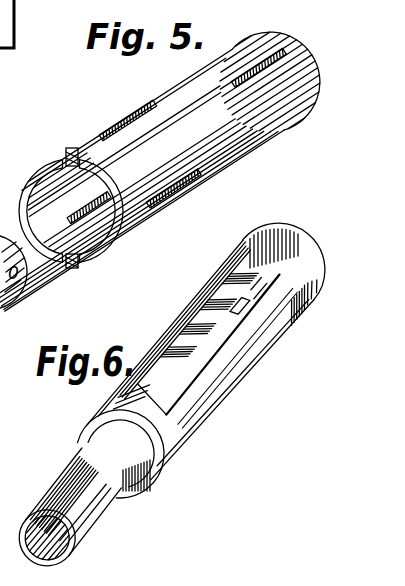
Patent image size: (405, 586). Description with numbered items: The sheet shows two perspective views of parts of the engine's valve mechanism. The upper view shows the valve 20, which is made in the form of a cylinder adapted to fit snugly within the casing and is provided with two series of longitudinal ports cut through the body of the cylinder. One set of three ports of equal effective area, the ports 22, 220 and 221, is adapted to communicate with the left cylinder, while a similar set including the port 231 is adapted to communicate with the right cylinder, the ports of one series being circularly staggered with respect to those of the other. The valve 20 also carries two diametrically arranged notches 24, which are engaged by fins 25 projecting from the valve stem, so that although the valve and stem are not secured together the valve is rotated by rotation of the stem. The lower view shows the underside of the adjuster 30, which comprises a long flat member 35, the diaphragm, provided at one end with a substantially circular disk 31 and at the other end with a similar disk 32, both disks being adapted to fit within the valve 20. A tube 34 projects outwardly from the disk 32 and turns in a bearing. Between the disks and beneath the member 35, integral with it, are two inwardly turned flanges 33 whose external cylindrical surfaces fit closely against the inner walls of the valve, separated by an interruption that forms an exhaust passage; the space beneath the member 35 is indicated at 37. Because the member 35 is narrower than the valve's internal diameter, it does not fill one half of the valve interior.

In FIG. 5, the valve 20 is at (169, 163).
In FIG. 5, the port 22 is at (123, 131).
In FIG. 5, the notch 24 is at (68, 152).
In FIG. 5, the fin 25 is at (13, 295).
In FIG. 5, the port 220 is at (88, 222).
In FIG. 5, the port 221 is at (186, 194).
In FIG. 5, the port 231 is at (251, 84).
In FIG. 6, the adjuster 30 is at (255, 325).
In FIG. 6, the disk 31 is at (150, 451).
In FIG. 6, the disk 32 is at (306, 298).
In FIG. 6, the flange 33 is at (188, 322).
In FIG. 6, the tube 34 is at (104, 489).
In FIG. 6, the member 35 is at (209, 322).
In FIG. 6, the space 37 is at (255, 317).